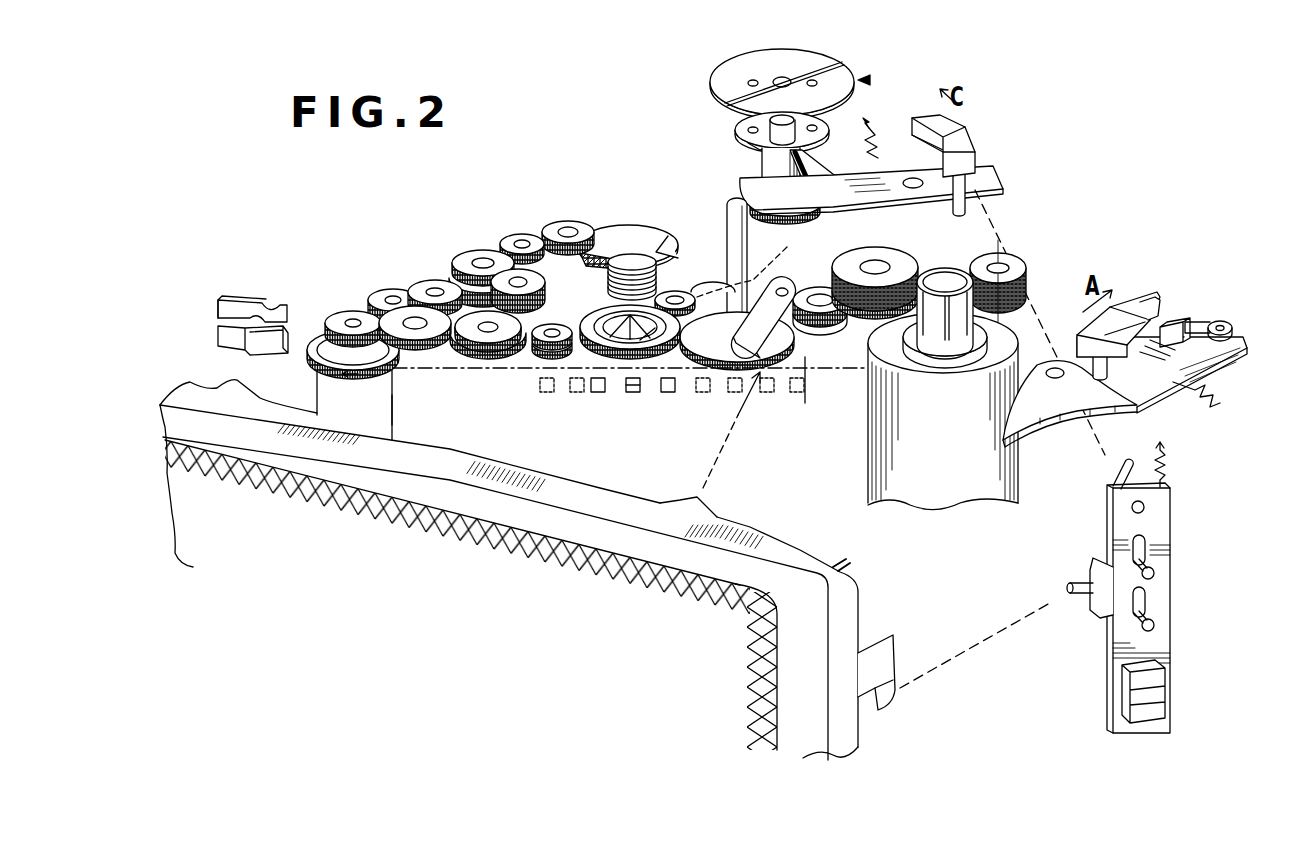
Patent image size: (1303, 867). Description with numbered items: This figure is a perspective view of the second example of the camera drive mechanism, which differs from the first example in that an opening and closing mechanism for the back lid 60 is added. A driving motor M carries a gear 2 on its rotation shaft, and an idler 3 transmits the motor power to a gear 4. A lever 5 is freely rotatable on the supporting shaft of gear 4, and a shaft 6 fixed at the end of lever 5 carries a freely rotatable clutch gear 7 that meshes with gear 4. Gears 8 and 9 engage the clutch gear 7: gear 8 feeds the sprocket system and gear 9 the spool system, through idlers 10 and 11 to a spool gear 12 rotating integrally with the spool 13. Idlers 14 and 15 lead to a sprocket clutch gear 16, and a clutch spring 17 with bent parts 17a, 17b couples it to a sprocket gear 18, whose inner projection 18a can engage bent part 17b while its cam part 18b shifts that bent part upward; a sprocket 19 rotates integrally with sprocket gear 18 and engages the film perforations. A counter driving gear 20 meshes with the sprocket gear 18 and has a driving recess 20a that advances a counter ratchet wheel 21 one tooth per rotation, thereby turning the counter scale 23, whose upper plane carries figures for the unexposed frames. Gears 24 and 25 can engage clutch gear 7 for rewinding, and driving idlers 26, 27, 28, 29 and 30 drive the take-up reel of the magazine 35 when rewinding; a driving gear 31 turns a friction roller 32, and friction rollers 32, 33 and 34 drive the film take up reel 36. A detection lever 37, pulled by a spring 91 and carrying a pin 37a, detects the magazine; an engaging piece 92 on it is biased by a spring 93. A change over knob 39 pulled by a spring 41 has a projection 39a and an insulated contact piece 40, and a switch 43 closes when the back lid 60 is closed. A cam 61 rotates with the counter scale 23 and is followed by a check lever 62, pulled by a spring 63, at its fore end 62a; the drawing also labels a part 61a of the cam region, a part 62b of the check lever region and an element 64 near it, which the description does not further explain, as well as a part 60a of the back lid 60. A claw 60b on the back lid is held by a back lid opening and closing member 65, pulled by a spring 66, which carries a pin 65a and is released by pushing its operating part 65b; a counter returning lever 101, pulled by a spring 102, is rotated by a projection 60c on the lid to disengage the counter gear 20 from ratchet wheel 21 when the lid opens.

The gear 2 is at (336, 322).
The idler 3 is at (416, 350).
The gear 4 is at (475, 338).
The lever 5 is at (492, 350).
The shaft 6 is at (507, 348).
The clutch gear 7 is at (533, 287).
The gear 8 is at (483, 252).
The gear 9 is at (458, 262).
The idler 10 is at (428, 282).
The idler 11 is at (385, 290).
The spool gear 12 is at (368, 372).
The spool 13 is at (392, 395).
The idler 14 is at (520, 234).
The idler 15 is at (568, 221).
The sprocket clutch gear 16 is at (630, 235).
The clutch spring 17 is at (640, 256).
The bent part 17a is at (672, 254).
The bent part 17b is at (600, 255).
The sprocket gear 18 is at (597, 387).
The projection 18a is at (630, 392).
The cam part 18b is at (666, 392).
The sprocket 19 is at (700, 390).
The counter driving gear 20 is at (725, 365).
The driving recess 20a is at (733, 202).
The counter ratchet wheel 21 is at (778, 208).
The counter scale 23 is at (730, 84).
The gear 24 is at (547, 350).
The gear 25 is at (558, 354).
The driving idler 26 is at (595, 318).
The driving idler 27 is at (705, 284).
The driving idler 28 is at (690, 296).
The driving idler 29 is at (768, 290).
The driving idler 30 is at (815, 287).
The driving gear 31 is at (840, 318).
The friction roller 32 is at (895, 262).
The friction roller 33 is at (942, 358).
The friction roller 34 is at (1003, 258).
The magazine 35 is at (920, 505).
The film take up reel 36 is at (943, 270).
The detection lever 37 is at (1030, 417).
The pin 37a is at (1100, 395).
The change over knob 39 is at (1118, 305).
The projection 39a is at (1155, 298).
The contact piece 40 is at (1135, 412).
The spring 41 is at (1093, 356).
The switch 43 is at (245, 300).
The back lid 60 is at (347, 468).
The frame lip 60a is at (217, 385).
The claw 60b is at (887, 660).
The projection 60c is at (700, 497).
The cam 61 is at (826, 124).
The hub lip 61a is at (750, 146).
The check lever 62 is at (835, 190).
The fore end 62a is at (818, 162).
The pin 62b is at (997, 178).
The spring 63 is at (878, 138).
The block 64 is at (965, 146).
The back lid opening and closing member 65 is at (1170, 606).
The pin 65a is at (1110, 476).
The operating part 65b is at (1165, 722).
The spring 66 is at (1166, 476).
The spring 91 is at (1210, 405).
The engaging piece 92 is at (1216, 321).
The spring 93 is at (1175, 325).
The counter returning lever 101 is at (795, 360).
The spring 102 is at (806, 378).
The driving motor M is at (323, 357).